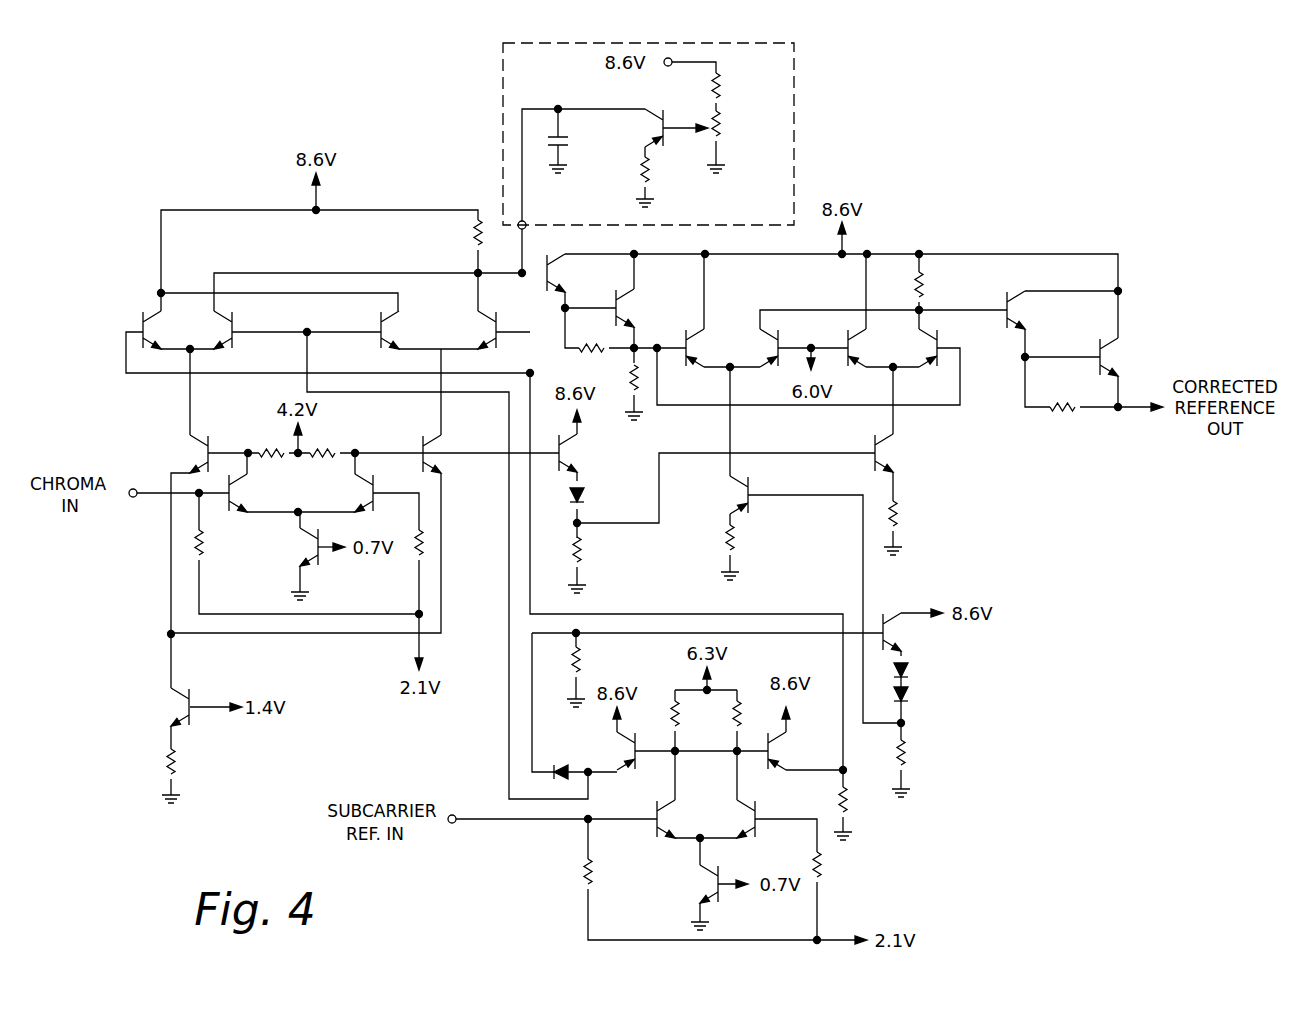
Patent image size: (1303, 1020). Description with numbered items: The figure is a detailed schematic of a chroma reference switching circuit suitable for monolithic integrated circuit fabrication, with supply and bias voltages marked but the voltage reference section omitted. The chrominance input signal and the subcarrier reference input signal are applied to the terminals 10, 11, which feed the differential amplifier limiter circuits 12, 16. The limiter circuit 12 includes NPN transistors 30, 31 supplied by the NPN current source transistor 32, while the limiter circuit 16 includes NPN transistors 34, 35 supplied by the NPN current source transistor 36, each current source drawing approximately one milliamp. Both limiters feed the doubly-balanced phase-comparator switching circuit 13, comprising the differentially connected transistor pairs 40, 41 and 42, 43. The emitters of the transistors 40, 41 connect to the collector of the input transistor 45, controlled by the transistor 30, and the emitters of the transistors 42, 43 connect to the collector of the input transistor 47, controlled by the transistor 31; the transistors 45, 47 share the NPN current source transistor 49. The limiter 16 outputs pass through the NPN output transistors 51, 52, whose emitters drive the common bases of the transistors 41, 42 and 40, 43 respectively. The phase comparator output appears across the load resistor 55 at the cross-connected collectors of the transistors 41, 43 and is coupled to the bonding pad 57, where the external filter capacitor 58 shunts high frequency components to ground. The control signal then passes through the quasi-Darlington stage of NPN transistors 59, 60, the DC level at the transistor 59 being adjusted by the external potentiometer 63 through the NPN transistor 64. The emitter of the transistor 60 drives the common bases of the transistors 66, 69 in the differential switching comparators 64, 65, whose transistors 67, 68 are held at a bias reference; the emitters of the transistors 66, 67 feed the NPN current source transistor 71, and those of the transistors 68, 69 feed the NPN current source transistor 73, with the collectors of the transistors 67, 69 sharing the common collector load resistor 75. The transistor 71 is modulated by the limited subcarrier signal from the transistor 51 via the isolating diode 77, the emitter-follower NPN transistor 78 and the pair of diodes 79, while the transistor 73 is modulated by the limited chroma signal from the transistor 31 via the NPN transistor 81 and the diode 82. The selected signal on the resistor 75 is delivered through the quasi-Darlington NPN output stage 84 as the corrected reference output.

The chrominance input terminal 10 is at (130, 496).
The subcarrier reference input terminal 11 is at (449, 822).
The differential amplifier limiter circuit 12 is at (309, 537).
The doubly-balanced differential phase-comparator switching circuit 13 is at (344, 335).
The differential amplifier limiter circuit 16 is at (700, 823).
The NPN transistor 30 is at (232, 500).
The NPN transistor 31 is at (376, 500).
The NPN current source transistor 32 is at (321, 560).
The NPN transistor 34 is at (654, 826).
The NPN transistor 35 is at (758, 826).
The NPN current source transistor 36 is at (721, 898).
The transistor 40 is at (146, 334).
The transistor 41 is at (236, 334).
The transistor 42 is at (384, 332).
The transistor 43 is at (499, 323).
The input transistor 45 is at (232, 438).
The input transistor 47 is at (419, 448).
The NPN current source transistor 49 is at (192, 701).
The NPN output transistor 51 is at (632, 748).
The NPN output transistor 52 is at (771, 748).
The load resistor 55 is at (474, 236).
The bonding pad 57 is at (526, 222).
The filter capacitor 58 is at (568, 138).
The NPN transistor 59 is at (551, 276).
The NPN transistor 60 is at (620, 311).
The external potentiometer 63 is at (720, 128).
The NPN transistor / differential amplifier switching comparator 64 is at (665, 118).
The differential amplifier switching comparator 65 is at (877, 357).
The NPN transistor 66 is at (690, 358).
The NPN transistor 67 is at (781, 356).
The NPN transistor 68 is at (846, 340).
The NPN transistor 69 is at (940, 356).
The NPN current source transistor 71 is at (752, 485).
The NPN current source transistor 73 is at (878, 456).
The common collector load resistor 75 is at (922, 284).
The isolating diode 77 is at (572, 740).
The emitter-follower NPN transistor 78 is at (886, 634).
The pair of diodes 79 is at (907, 667).
The NPN transistor 81 is at (562, 456).
The diode 82 is at (585, 490).
The quasi-Darlington NPN output stage 84 is at (1062, 333).